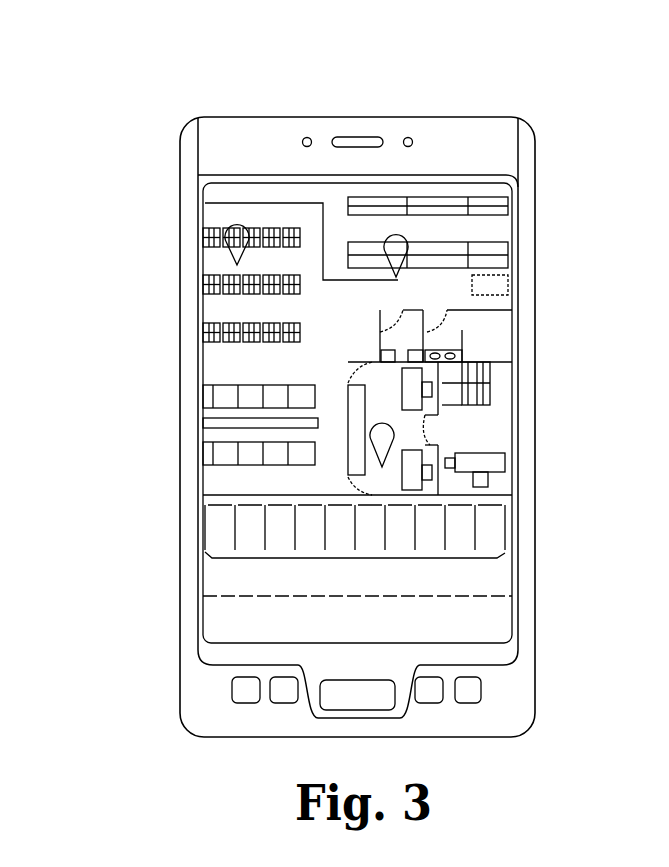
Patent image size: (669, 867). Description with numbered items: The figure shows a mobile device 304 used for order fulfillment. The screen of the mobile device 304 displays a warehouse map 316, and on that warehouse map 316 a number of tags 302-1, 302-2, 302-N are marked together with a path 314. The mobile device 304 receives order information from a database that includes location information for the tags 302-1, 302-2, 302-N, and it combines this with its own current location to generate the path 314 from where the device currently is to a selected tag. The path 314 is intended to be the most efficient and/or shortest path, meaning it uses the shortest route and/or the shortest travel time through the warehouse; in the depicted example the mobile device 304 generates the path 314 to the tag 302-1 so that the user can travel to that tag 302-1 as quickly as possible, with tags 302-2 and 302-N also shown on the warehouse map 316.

The mobile device 304 is at (536, 290).
The path 314 is at (268, 203).
The warehouse map 316 is at (363, 560).
The tag 302-N is at (228, 240).
The tag 302-1 is at (407, 238).
The tag 302-2 is at (393, 437).